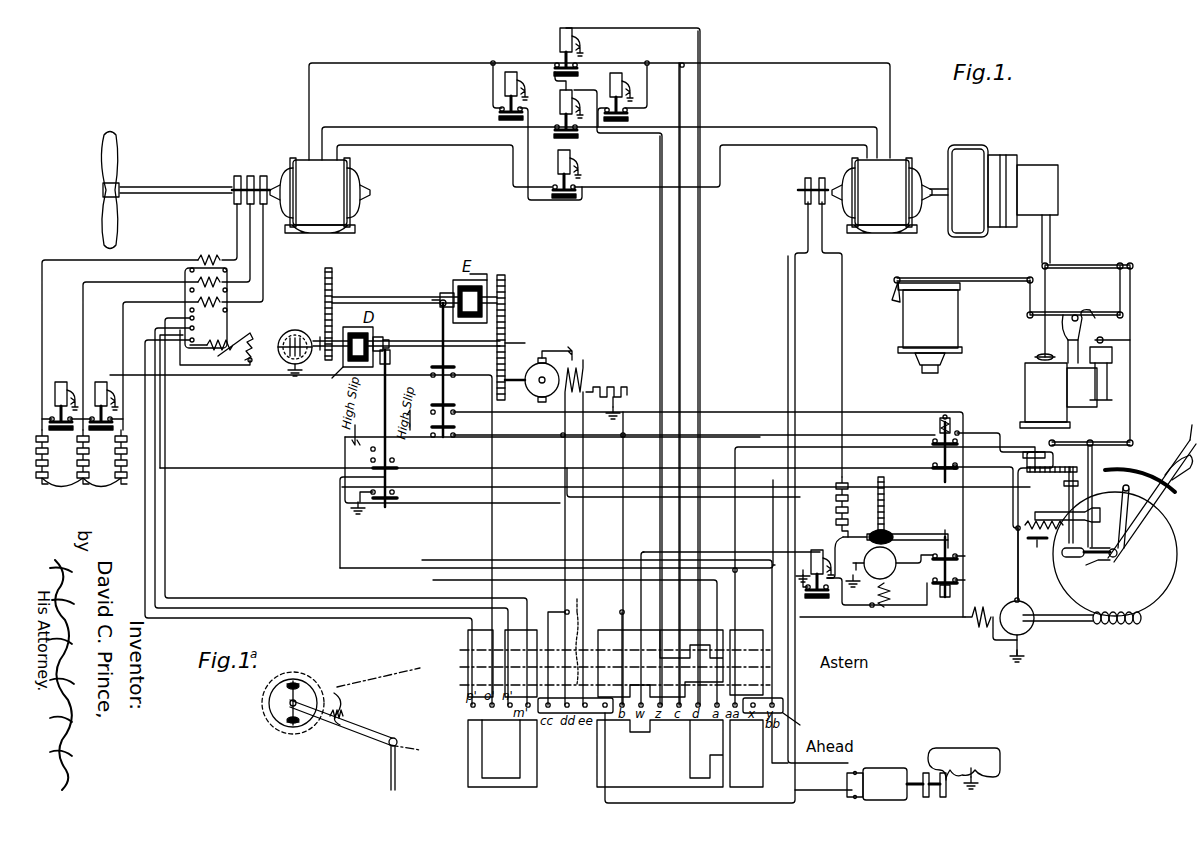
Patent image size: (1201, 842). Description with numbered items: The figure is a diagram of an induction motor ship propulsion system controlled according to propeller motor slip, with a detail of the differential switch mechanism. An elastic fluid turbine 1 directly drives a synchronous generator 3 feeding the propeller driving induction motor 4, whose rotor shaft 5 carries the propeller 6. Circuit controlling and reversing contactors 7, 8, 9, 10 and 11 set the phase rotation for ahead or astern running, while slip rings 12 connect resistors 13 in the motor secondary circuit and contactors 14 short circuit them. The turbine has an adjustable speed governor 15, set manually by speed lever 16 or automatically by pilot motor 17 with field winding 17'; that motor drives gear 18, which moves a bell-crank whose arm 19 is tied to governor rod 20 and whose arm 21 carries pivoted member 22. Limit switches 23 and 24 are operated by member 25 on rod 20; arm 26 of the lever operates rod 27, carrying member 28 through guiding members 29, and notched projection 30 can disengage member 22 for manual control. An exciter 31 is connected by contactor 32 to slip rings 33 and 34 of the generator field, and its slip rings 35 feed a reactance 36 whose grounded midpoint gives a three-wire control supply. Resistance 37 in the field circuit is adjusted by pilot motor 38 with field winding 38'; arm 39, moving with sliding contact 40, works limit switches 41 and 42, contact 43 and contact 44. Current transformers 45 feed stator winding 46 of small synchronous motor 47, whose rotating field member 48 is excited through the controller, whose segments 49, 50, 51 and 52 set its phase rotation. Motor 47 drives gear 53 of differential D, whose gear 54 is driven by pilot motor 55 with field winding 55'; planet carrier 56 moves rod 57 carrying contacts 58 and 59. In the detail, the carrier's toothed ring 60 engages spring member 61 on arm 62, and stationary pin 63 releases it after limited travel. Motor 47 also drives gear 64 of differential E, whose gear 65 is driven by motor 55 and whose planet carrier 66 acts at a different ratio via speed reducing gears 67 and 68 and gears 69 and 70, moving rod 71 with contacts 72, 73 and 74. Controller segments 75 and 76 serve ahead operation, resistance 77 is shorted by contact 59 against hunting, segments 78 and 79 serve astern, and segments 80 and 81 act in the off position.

In FIG. 1, the elastic fluid turbine 1 is at (978, 157).
In FIG. 1, the synchronous generator 3 is at (892, 168).
In FIG. 1, the propeller driving induction motor 4 is at (302, 170).
In FIG. 1, the rotor shaft 5 is at (182, 187).
In FIG. 1, the propeller 6 is at (105, 232).
In FIG. 1, the circuit controlling and reversing contactor 7 is at (560, 108).
In FIG. 1, the circuit controlling and reversing contactor 8 is at (560, 45).
In FIG. 1, the circuit controlling and reversing contactor 9 is at (610, 93).
In FIG. 1, the circuit controlling and reversing contactor 10 is at (576, 167).
In FIG. 1, the circuit controlling and reversing contactor 11 is at (517, 98).
In FIG. 1, the slip rings 12 is at (263, 176).
In FIG. 1, the resistors 13 is at (110, 478).
In FIG. 1, the contactors 14 is at (101, 382).
In FIG. 1, the adjustable speed governor 15 is at (1012, 327).
In FIG. 1, the speed lever 16 is at (1192, 446).
In FIG. 1, the pilot motor 17 is at (1030, 630).
In FIG. 1, the field winding 17' is at (987, 630).
In FIG. 1, the gear 18 is at (1140, 603).
In FIG. 1, the arm 19 is at (1101, 563).
In FIG. 1, the rod 20 is at (1094, 455).
In FIG. 1, the arm 21 is at (1122, 508).
In FIG. 1, the pivoted member 22 is at (1130, 485).
In FIG. 1, the limit switch 23 is at (1033, 452).
In FIG. 1, the limit switch 24 is at (1037, 548).
In FIG. 1, the member 25 is at (1040, 512).
In FIG. 1, the arm 26 is at (1080, 557).
In FIG. 1, the rod 27 is at (1068, 500).
In FIG. 1, the member 28 is at (1062, 467).
In FIG. 1, the guiding members 29 is at (1064, 484).
In FIG. 1, the notched projection 30 is at (1172, 478).
In FIG. 1, the exciter 31 is at (883, 775).
In FIG. 1, the contactor 32 is at (819, 598).
In FIG. 1, the slip ring 33 is at (805, 182).
In FIG. 1, the slip ring 34 is at (820, 178).
In FIG. 1, the slip rings 35 is at (936, 797).
In FIG. 1, the reactance 36 is at (968, 757).
In FIG. 1, the resistance 37 is at (838, 510).
In FIG. 1, the pilot motor 38 is at (889, 567).
In FIG. 1, the field winding 38' is at (877, 607).
In FIG. 1, the arm 39 is at (915, 534).
In FIG. 1, the sliding contact 40 is at (874, 512).
In FIG. 1, the limit switch 41 is at (933, 462).
In FIG. 1, the limit switch 42 is at (957, 556).
In FIG. 1, the contact 43 is at (935, 440).
In FIG. 1, the contact 44 is at (957, 580).
In FIG. 1, the current transformers 45 is at (185, 330).
In FIG. 1, the stator winding 46 is at (235, 352).
In FIG. 1, the small synchronous motor 47 is at (296, 338).
In FIG. 1, the rotating field member 48 is at (278, 347).
In FIG. 1, the controller segment 49 is at (520, 636).
In FIG. 1, the controller segment 50 is at (475, 664).
In FIG. 1, the controller segment 51 is at (488, 720).
In FIG. 1, the controller segment 52 is at (470, 740).
In FIG. 1, the gear 53 is at (331, 382).
In FIG. 1, the gear 54 is at (383, 340).
In FIG. 1, the pilot motor 55 is at (532, 371).
In FIG. 1, the field winding 55' is at (581, 388).
In FIG. 1, the planet carrier 56 is at (353, 328).
In FIG. 1, the rod 57 is at (390, 370).
In FIG. 1A, the rod 57 is at (396, 772).
In FIG. 1, the contact 58 is at (370, 468).
In FIG. 1, the contact 59 is at (392, 500).
In FIG. 1A, the toothed ring 60 is at (294, 673).
In FIG. 1A, the spring member 61 is at (330, 725).
In FIG. 1A, the arm 62 is at (356, 730).
In FIG. 1A, the stationary pin 63 is at (338, 690).
In FIG. 1, the gear 64 is at (441, 293).
In FIG. 1, the gear 65 is at (483, 282).
In FIG. 1, the planet carrier 66 is at (476, 272).
In FIG. 1, the speed reducing gear 67 is at (322, 337).
In FIG. 1, the speed reducing gear 68 is at (325, 277).
In FIG. 1, the gear 69 is at (506, 343).
In FIG. 1, the gear 70 is at (505, 298).
In FIG. 1, the rod 71 is at (448, 360).
In FIG. 1, the contact 72 is at (460, 370).
In FIG. 1, the contact 73 is at (460, 404).
In FIG. 1, the contact 74 is at (460, 425).
In FIG. 1, the controller segment 75 is at (597, 782).
In FIG. 1, the controller segment 76 is at (763, 780).
In FIG. 1, the resistance 77 is at (622, 393).
In FIG. 1, the controller segment 78 is at (610, 630).
In FIG. 1, the controller segment 79 is at (760, 640).
In FIG. 1, the controller segment 80 is at (802, 722).
In FIG. 1, the controller segment 81 is at (581, 639).